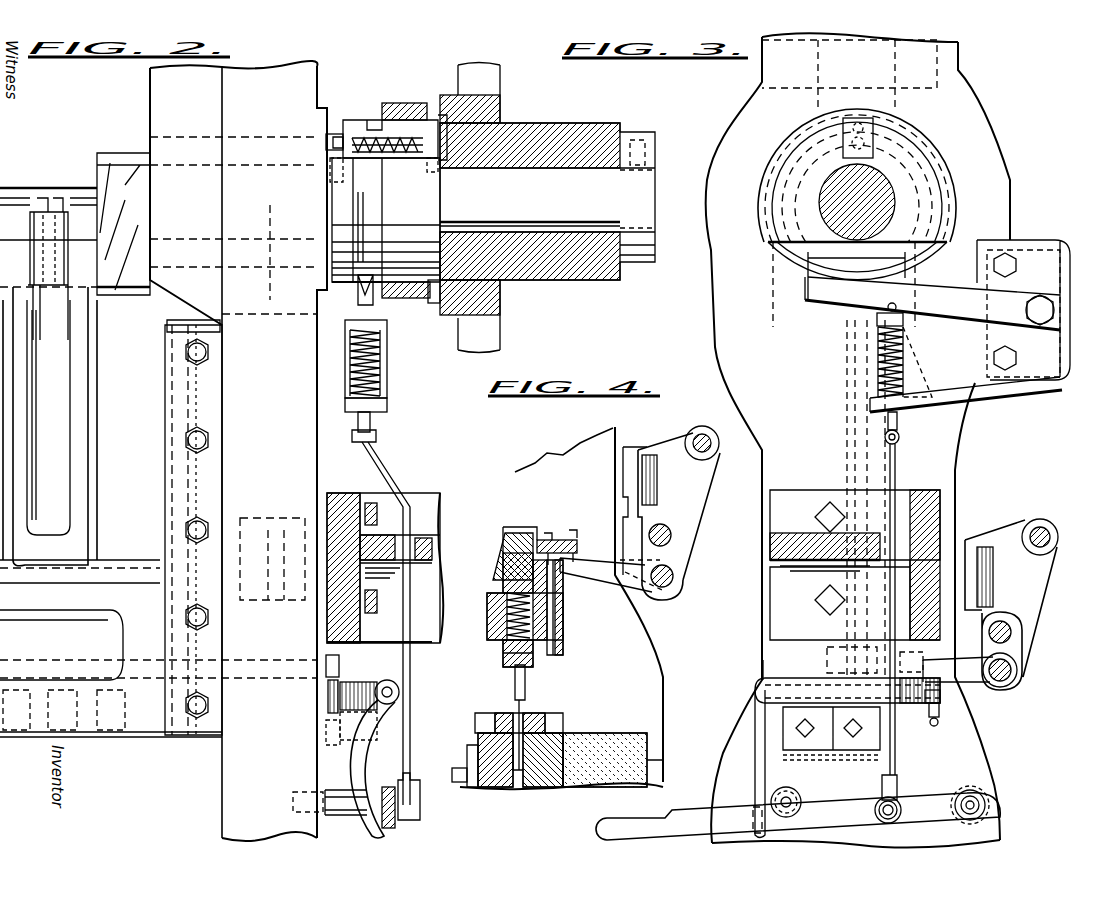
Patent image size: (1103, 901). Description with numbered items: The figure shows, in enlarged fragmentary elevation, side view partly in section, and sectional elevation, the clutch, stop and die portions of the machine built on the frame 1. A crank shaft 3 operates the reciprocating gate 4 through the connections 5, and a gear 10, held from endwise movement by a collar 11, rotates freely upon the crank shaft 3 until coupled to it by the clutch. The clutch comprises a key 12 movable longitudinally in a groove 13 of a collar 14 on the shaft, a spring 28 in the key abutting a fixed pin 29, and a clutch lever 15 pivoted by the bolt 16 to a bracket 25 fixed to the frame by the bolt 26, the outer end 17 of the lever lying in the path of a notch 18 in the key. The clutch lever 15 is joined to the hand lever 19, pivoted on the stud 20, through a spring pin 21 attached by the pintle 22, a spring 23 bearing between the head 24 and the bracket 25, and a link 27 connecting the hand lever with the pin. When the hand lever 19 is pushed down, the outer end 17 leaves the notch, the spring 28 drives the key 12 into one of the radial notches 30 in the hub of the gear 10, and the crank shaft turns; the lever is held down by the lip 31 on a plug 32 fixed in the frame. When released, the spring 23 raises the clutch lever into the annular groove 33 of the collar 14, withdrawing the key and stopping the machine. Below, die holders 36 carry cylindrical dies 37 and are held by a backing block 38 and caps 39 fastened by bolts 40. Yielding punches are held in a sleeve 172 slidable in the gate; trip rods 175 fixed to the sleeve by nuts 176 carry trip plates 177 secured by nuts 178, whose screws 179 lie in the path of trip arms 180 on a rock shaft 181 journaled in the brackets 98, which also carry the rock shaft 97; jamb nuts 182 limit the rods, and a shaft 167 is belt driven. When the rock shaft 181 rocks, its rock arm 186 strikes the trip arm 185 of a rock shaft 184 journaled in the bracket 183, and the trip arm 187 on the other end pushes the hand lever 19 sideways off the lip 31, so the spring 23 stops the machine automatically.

In FIG. 2, the frame 1 is at (222, 762).
In FIG. 4, the frame 1 is at (665, 726).
In FIG. 3, the frame 1 is at (960, 440).
In FIG. 2, the crank shaft 3 is at (547, 201).
In FIG. 3, the crank shaft 3 is at (822, 210).
In FIG. 4, the reciprocating gate 4 is at (565, 617).
In FIG. 2, the connections 5 is at (90, 362).
In FIG. 2, the gear 10 is at (500, 327).
In FIG. 2, the collar 11 is at (650, 165).
In FIG. 2, the key 12 is at (375, 120).
In FIG. 2, the groove 13 is at (343, 120).
In FIG. 2, the collar 14 is at (440, 197).
In FIG. 3, the clutch lever 15 is at (1015, 295).
In FIG. 3, the bolt 16 is at (1057, 312).
In FIG. 2, the outer end 17 is at (378, 300).
In FIG. 3, the outer end 17 is at (808, 290).
In FIG. 2, the notch 18 is at (402, 105).
In FIG. 2, the hand lever 19 is at (405, 818).
In FIG. 3, the hand lever 19 is at (690, 812).
In FIG. 3, the stud 20 is at (990, 803).
In FIG. 2, the spring pin 21 is at (376, 429).
In FIG. 3, the spring pin 21 is at (900, 420).
In FIG. 3, the pintle 22 is at (896, 303).
In FIG. 2, the spring 23 is at (380, 364).
In FIG. 3, the spring 23 is at (878, 372).
In FIG. 2, the head 24 is at (387, 346).
In FIG. 3, the head 24 is at (885, 325).
In FIG. 2, the bracket 25 is at (387, 406).
In FIG. 3, the bracket 25 is at (1000, 382).
In FIG. 3, the bolt 26 is at (1012, 365).
In FIG. 2, the link 27 is at (412, 700).
In FIG. 3, the link 27 is at (897, 470).
In FIG. 2, the spring 28 is at (460, 115).
In FIG. 2, the fixed pin 29 is at (328, 138).
In FIG. 2, the radial notches 30 is at (436, 305).
In FIG. 3, the lip 31 is at (792, 803).
In FIG. 2, the plug 32 is at (320, 805).
In FIG. 3, the plug 32 is at (800, 795).
In FIG. 2, the annular groove 33 is at (370, 200).
In FIG. 4, the die holders 36 is at (485, 740).
In FIG. 4, the dies 37 is at (560, 725).
In FIG. 4, the backing block 38 is at (630, 732).
In FIG. 4, the caps 39 is at (478, 785).
In FIG. 4, the bolts 40 is at (456, 780).
In FIG. 4, the rock shaft 97 is at (666, 523).
In FIG. 3, the rock shaft 97 is at (1003, 622).
In FIG. 4, the brackets 98 is at (705, 530).
In FIG. 3, the brackets 98 is at (1011, 605).
In FIG. 4, the shaft 167 is at (704, 434).
In FIG. 3, the shaft 167 is at (1040, 525).
In FIG. 4, the sleeve 172 is at (503, 648).
In FIG. 4, the trip rods 175 is at (565, 637).
In FIG. 4, the nuts 176 is at (528, 667).
In FIG. 4, the trip plates 177 is at (578, 546).
In FIG. 4, the nuts 178 is at (552, 533).
In FIG. 4, the screws 179 is at (575, 533).
In FIG. 4, the trip arms 180 is at (622, 578).
In FIG. 4, the rock shaft 181 is at (680, 577).
In FIG. 3, the rock shaft 181 is at (1018, 682).
In FIG. 4, the jamb nuts 182 is at (512, 535).
In FIG. 2, the bracket 183 is at (340, 715).
In FIG. 3, the bracket 183 is at (808, 750).
In FIG. 2, the rock shaft 184 is at (387, 681).
In FIG. 3, the rock shaft 184 is at (757, 690).
In FIG. 2, the trip arm 185 is at (328, 695).
In FIG. 3, the trip arm 185 is at (940, 705).
In FIG. 2, the rock arm 186 is at (340, 662).
In FIG. 3, the rock arm 186 is at (940, 700).
In FIG. 2, the trip arm 187 is at (372, 760).
In FIG. 3, the trip arm 187 is at (755, 760).